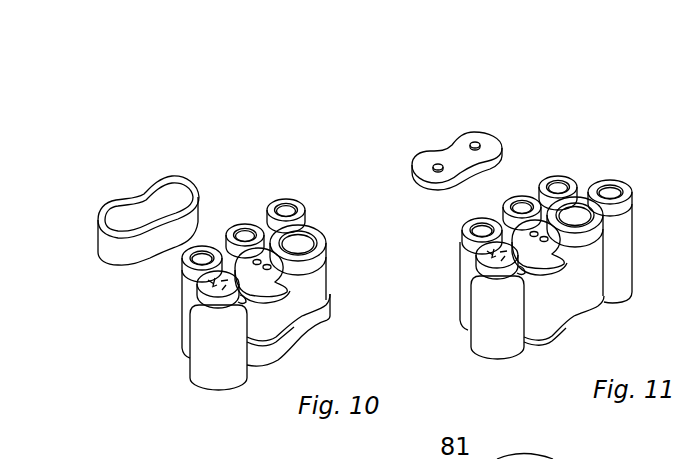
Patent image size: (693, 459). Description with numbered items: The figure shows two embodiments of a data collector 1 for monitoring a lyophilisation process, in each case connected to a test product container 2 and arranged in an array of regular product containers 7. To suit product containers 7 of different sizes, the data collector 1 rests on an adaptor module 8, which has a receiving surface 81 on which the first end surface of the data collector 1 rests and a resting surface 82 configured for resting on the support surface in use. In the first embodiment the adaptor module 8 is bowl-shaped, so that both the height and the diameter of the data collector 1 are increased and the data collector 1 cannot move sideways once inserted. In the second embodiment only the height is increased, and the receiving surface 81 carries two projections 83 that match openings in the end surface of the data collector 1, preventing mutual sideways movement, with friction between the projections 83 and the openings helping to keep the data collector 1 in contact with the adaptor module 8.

In FIG. 10, the data collector 1 is at (331, 278).
In FIG. 11, the data collector 1 is at (569, 301).
In FIG. 10, the test product container 2 is at (197, 380).
In FIG. 11, the test product container 2 is at (483, 323).
In FIG. 10, the product container 7 is at (302, 212).
In FIG. 11, the product container 7 is at (634, 241).
In FIG. 10, the adaptor module 8 is at (203, 172).
In FIG. 11, the adaptor module 8 is at (504, 131).
In FIG. 10, the receiving surface 81 is at (143, 224).
In FIG. 11, the receiving surface 81 is at (423, 165).
In FIG. 10, the resting surface 82 is at (135, 259).
In FIG. 11, the projection 83 is at (473, 142).